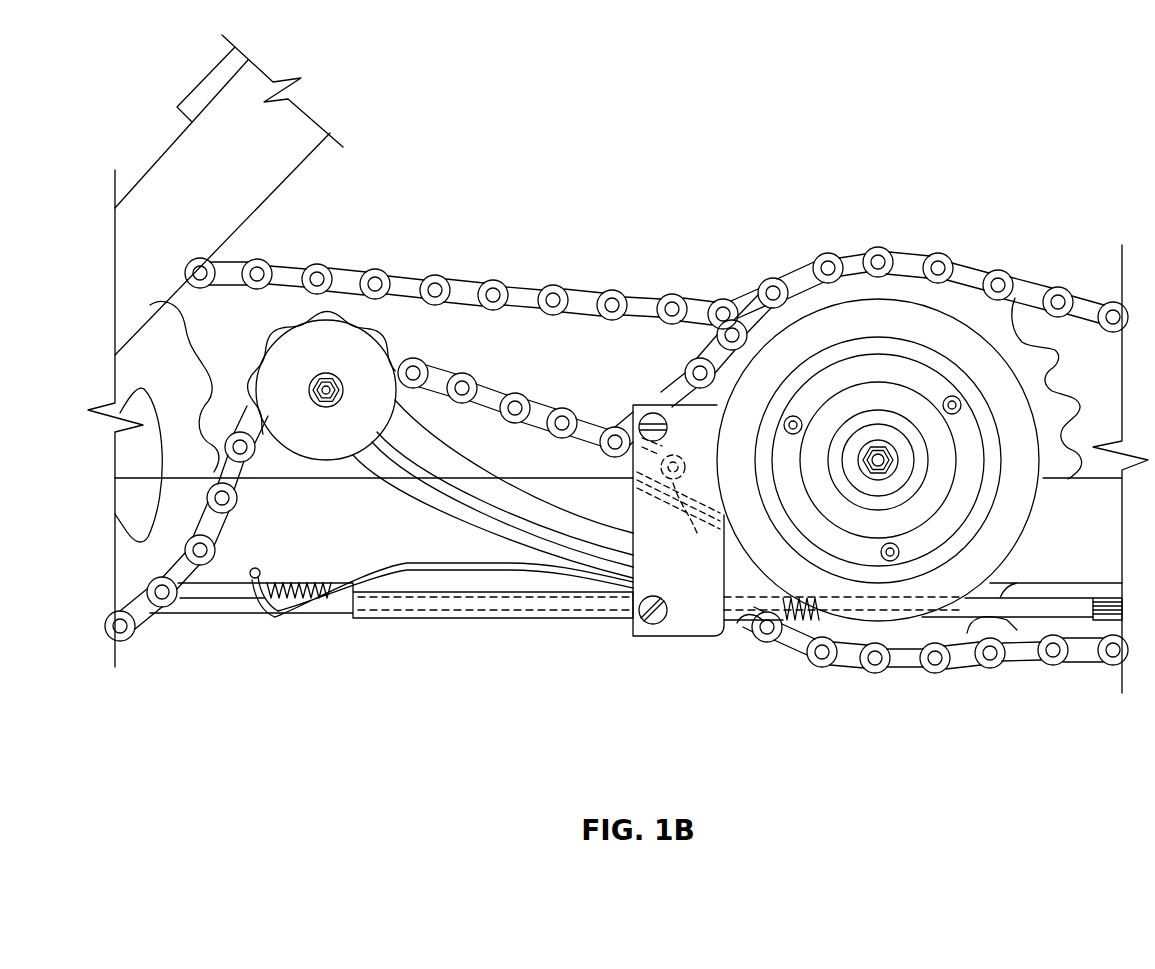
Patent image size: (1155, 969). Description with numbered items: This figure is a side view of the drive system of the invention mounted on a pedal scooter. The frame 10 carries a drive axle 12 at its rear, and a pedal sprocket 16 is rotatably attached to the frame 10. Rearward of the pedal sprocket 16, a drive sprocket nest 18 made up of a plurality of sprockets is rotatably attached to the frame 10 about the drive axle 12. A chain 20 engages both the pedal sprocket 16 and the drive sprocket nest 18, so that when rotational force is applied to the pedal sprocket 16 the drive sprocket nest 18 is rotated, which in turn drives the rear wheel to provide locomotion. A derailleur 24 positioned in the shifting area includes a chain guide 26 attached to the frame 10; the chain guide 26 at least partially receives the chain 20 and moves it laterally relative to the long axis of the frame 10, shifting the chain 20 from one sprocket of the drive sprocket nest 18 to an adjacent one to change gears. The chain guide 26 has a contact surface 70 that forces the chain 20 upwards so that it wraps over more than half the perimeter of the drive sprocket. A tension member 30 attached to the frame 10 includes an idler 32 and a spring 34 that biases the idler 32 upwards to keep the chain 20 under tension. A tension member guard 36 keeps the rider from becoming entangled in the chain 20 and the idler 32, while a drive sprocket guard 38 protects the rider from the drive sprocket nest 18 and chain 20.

The frame 10 is at (228, 571).
The drive axle 12 is at (866, 452).
The pedal sprocket 16 is at (180, 347).
The drive sprocket nest 18 is at (1002, 501).
The chain 20 is at (373, 272).
The derailleur 24 is at (697, 624).
The chain guide 26 is at (672, 525).
The tension member 30 is at (480, 532).
The idler 32 is at (358, 328).
The spring 34 is at (428, 485).
The tension member guard 36 is at (307, 432).
The drive sprocket guard 38 is at (753, 604).
The contact surface 70 is at (677, 497).